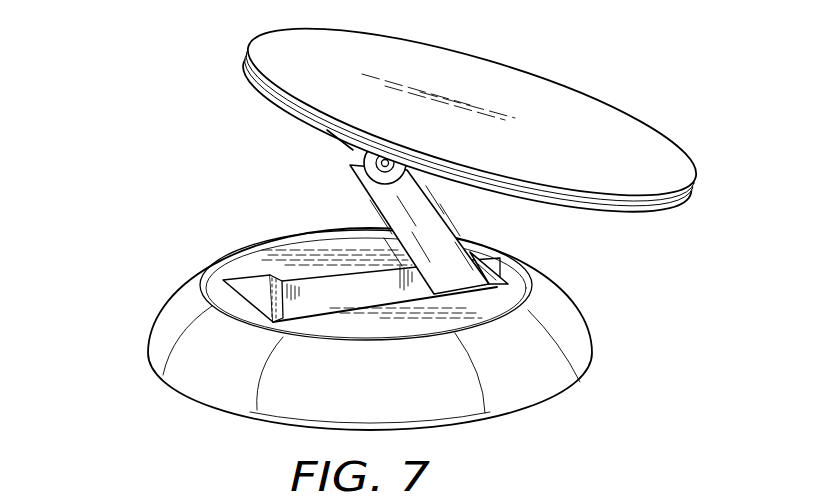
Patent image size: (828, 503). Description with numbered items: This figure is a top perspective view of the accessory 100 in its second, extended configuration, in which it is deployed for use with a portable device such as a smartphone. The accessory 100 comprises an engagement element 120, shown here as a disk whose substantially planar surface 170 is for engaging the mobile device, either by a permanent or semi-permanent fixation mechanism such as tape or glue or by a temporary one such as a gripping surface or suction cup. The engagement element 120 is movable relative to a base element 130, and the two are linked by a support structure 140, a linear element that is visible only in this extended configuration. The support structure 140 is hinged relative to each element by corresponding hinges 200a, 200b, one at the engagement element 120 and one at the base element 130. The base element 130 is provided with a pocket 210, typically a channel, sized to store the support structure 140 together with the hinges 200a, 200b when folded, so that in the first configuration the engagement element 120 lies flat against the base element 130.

The accessory 100 is at (404, 215).
The engagement element 120 is at (243, 55).
The base element 130 is at (148, 336).
The support structure 140 is at (373, 192).
The substantially planar surface 170 is at (463, 72).
The hinge 200a is at (340, 138).
The hinge 200b is at (495, 284).
The pocket 210 is at (325, 289).